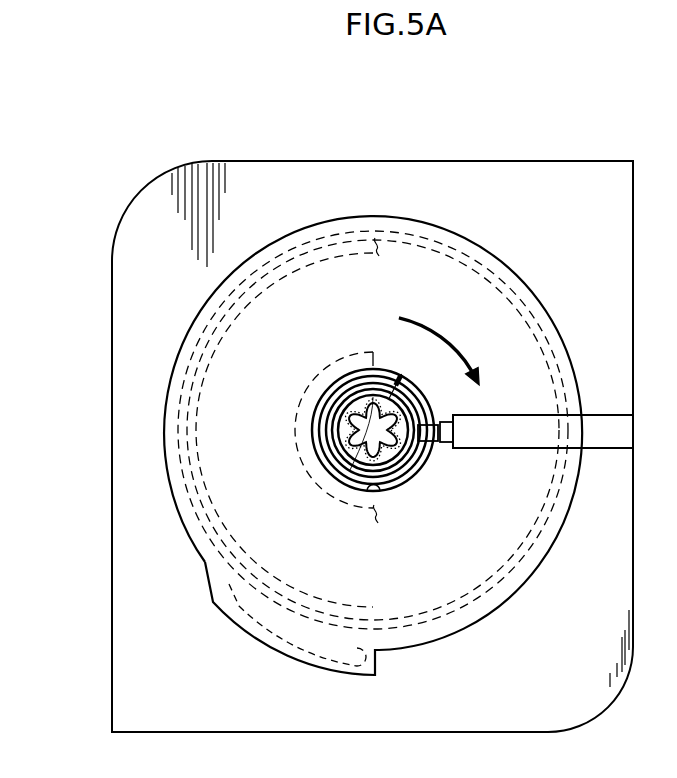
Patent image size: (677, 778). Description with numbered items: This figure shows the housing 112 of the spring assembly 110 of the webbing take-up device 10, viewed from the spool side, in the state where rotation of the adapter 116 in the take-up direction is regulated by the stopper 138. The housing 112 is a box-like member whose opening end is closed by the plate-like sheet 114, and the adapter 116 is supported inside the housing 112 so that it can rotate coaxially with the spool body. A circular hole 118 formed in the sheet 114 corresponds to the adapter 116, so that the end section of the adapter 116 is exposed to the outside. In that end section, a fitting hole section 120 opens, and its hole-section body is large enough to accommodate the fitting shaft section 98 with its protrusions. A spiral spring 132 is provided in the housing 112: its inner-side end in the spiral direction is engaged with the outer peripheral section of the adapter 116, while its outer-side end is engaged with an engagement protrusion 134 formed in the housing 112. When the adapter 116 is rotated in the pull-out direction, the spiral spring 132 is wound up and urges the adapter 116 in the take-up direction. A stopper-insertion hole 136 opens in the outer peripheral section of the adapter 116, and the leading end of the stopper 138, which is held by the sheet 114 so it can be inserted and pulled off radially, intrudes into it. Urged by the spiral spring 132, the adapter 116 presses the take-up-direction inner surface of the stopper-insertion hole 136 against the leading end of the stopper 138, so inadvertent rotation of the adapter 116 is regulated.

The webbing take-up device 10 is at (372, 413).
The spring assembly 110 is at (367, 150).
The housing 112 is at (503, 178).
The sheet 114 is at (495, 300).
The adapter 116 is at (415, 486).
The circular hole 118 is at (387, 504).
The fitting shaft section 98 is at (340, 505).
The fitting hole section 120 is at (300, 455).
The spiral spring 132 is at (472, 604).
The engagement protrusion 134 is at (283, 637).
The stopper-insertion hole 136 is at (408, 368).
The stopper 138 is at (512, 449).